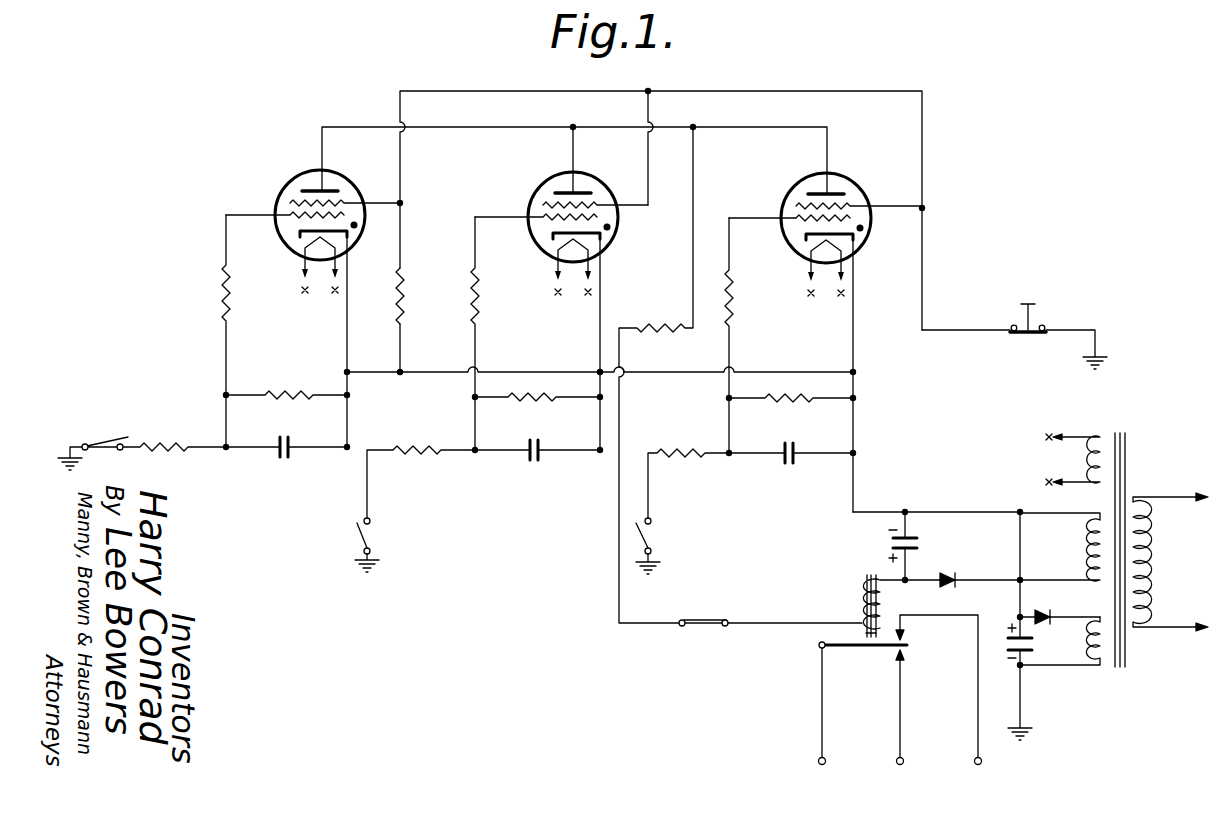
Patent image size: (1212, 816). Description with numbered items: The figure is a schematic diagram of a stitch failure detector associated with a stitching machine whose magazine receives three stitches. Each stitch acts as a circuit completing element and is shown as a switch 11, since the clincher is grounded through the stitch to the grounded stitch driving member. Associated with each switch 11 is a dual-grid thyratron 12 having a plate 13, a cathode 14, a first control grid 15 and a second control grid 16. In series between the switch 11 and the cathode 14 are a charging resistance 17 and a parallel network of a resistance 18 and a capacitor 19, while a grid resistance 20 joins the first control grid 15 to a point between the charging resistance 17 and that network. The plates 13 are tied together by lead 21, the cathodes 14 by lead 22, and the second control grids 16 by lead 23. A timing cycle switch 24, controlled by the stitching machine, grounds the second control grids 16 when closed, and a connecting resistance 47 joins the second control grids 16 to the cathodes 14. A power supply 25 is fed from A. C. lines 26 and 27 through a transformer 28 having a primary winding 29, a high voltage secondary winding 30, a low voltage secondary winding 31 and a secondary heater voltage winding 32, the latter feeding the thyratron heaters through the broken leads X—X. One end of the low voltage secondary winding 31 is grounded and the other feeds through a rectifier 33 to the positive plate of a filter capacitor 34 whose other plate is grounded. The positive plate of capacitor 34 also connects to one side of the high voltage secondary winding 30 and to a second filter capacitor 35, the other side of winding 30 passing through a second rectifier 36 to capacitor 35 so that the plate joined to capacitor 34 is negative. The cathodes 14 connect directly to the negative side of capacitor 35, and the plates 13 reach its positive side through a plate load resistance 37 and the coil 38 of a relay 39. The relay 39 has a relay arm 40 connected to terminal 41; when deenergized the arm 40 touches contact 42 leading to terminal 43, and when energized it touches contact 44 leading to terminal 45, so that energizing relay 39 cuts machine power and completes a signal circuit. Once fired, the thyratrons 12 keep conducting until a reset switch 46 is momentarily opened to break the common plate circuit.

The switch 11 is at (654, 530).
The dual-grid thyratron 12 is at (790, 191).
The plate 13 is at (852, 192).
The cathode 14 is at (812, 241).
The first control grid 15 is at (800, 226).
The second control grid 16 is at (860, 205).
The charging resistance 17 is at (680, 454).
The resistance 18 is at (778, 402).
The capacitor 19 is at (796, 463).
The grid resistance 20 is at (726, 319).
The lead 21 is at (523, 127).
The lead 22 is at (528, 372).
The lead 23 is at (706, 91).
The timing cycle switch 24 is at (1033, 315).
The power supply 25 is at (1017, 504).
The A. C. line 26 is at (1180, 628).
The A. C. line 27 is at (1178, 497).
The transformer 28 is at (1128, 486).
The primary winding 29 is at (1154, 559).
The high voltage secondary winding 30 is at (1090, 551).
The low voltage secondary winding 31 is at (1090, 650).
The secondary heater voltage winding 32 is at (1095, 459).
The rectifier 33 is at (1046, 605).
The filter capacitor 34 is at (990, 632).
The filter capacitor 35 is at (890, 544).
The rectifier 36 is at (956, 574).
The plate load resistance 37 is at (652, 324).
The coil 38 is at (856, 596).
The relay 39 is at (862, 633).
The relay arm 40 is at (855, 650).
The terminal 41 is at (818, 762).
The contact 42 is at (906, 656).
The terminal 43 is at (897, 763).
The contact 44 is at (908, 636).
The terminal 45 is at (981, 764).
The reset switch 46 is at (702, 628).
The connecting resistance 47 is at (402, 282).